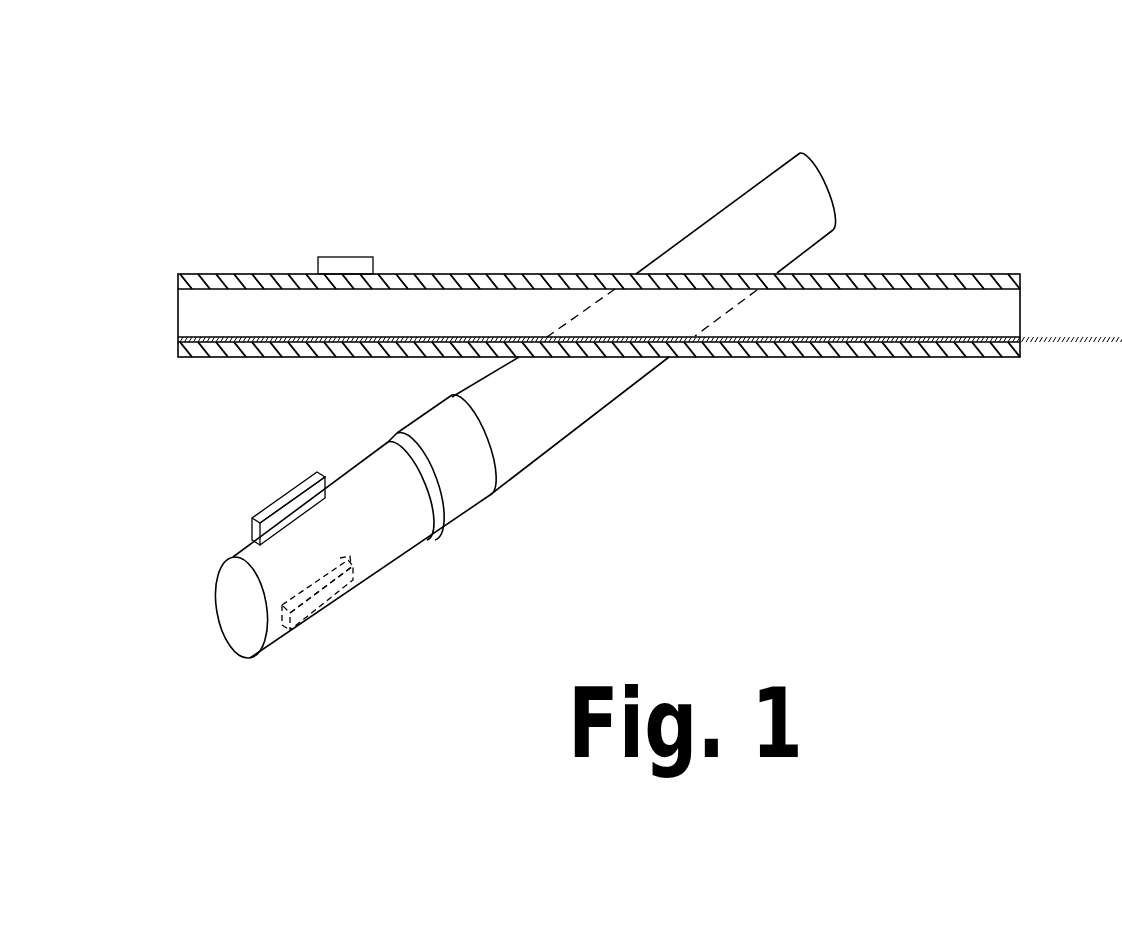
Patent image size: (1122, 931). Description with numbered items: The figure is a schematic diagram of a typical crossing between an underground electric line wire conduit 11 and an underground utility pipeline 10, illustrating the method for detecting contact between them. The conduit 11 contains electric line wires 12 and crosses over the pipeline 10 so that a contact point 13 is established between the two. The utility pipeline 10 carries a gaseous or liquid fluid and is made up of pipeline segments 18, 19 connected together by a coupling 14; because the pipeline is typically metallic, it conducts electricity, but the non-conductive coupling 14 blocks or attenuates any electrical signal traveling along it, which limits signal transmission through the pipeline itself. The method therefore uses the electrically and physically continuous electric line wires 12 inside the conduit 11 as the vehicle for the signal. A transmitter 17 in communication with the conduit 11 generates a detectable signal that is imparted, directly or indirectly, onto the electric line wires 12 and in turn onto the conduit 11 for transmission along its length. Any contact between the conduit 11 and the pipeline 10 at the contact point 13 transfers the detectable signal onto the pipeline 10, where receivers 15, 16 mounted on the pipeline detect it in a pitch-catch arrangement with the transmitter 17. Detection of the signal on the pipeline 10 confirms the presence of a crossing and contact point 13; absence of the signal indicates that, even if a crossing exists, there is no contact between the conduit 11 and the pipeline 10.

The underground utility pipeline 10 is at (811, 154).
The electric line wire conduit 11 is at (1008, 273).
The electric line wires 12 is at (1007, 343).
The contact point 13 is at (528, 357).
The coupling 14 is at (460, 508).
The receiver 15 is at (270, 510).
The receiver 16 is at (338, 607).
The transmitter 17 is at (317, 262).
The pipeline segment 18 is at (273, 640).
The pipeline segment 19 is at (782, 177).